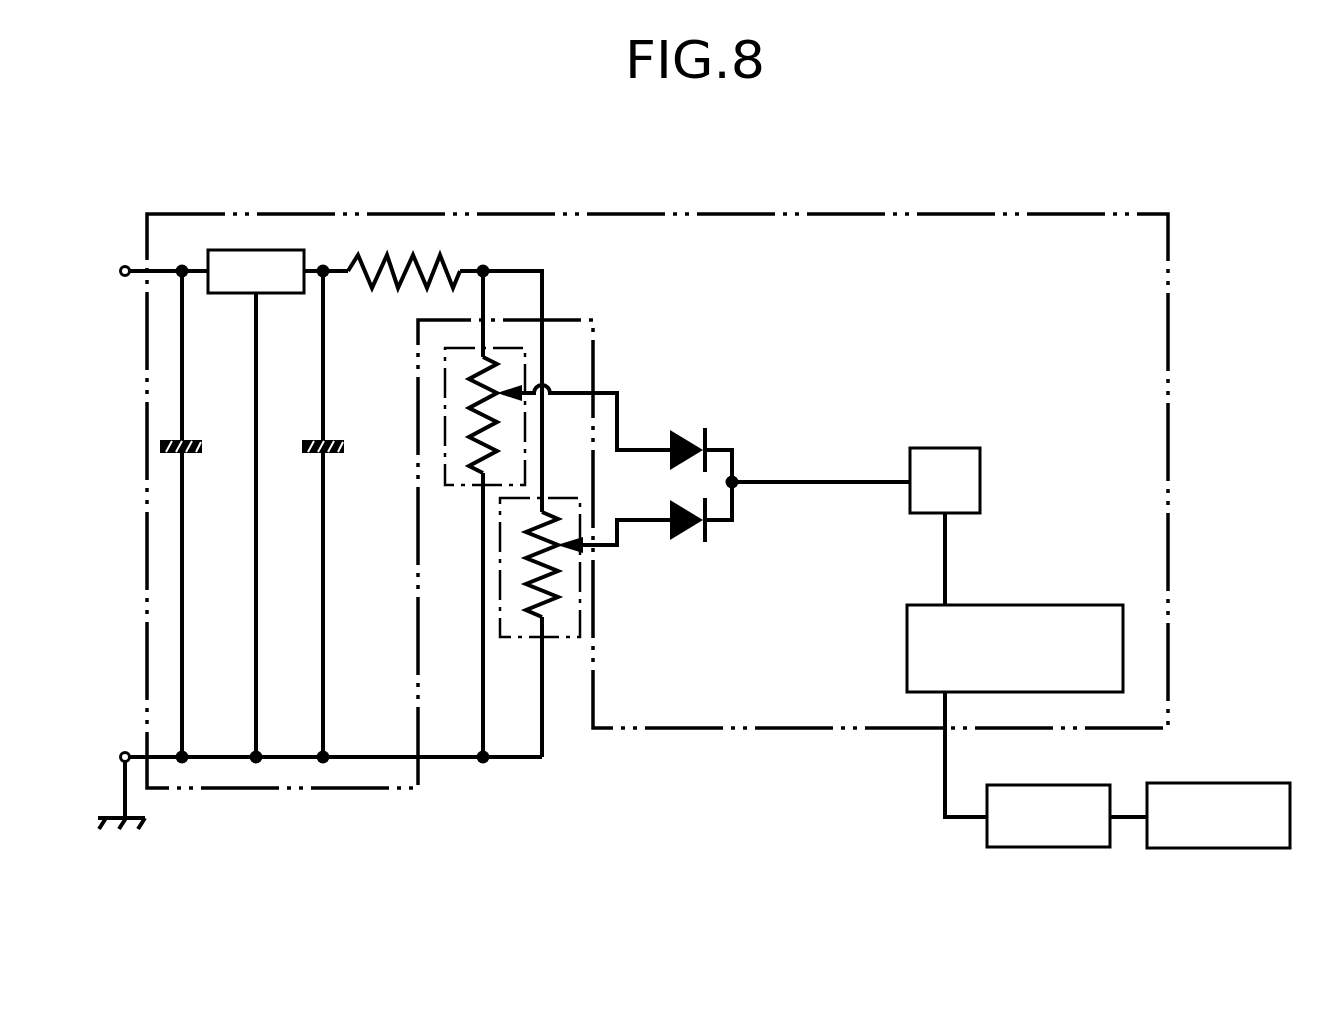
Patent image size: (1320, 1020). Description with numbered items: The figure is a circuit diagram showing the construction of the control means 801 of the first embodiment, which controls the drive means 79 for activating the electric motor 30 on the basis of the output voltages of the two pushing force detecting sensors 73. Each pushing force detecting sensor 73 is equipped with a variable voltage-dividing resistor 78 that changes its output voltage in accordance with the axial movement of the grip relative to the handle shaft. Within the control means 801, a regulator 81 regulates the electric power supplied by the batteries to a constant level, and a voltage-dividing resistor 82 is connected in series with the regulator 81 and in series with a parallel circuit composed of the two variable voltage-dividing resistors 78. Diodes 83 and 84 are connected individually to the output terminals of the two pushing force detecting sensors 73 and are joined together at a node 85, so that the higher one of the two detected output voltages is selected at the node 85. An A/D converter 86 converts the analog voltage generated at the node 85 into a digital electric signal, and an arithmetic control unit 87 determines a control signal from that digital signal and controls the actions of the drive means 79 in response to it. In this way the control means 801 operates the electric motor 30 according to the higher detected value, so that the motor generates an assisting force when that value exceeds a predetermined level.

The control means 801 is at (567, 212).
The regulator 81 is at (293, 250).
The voltage-dividing resistor 82 is at (400, 262).
The pushing force detecting sensor 73 is at (447, 424).
The variable voltage-dividing resistor 78 is at (480, 405).
The diode 83 is at (678, 430).
The diode 84 is at (677, 540).
The node 85 is at (737, 478).
The A/D converter 86 is at (962, 448).
The arithmetic control unit 87 is at (1012, 605).
The drive means 79 is at (1068, 790).
The electric motor 30 is at (1185, 783).